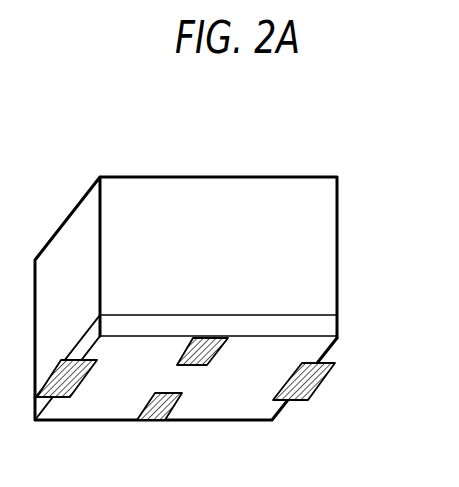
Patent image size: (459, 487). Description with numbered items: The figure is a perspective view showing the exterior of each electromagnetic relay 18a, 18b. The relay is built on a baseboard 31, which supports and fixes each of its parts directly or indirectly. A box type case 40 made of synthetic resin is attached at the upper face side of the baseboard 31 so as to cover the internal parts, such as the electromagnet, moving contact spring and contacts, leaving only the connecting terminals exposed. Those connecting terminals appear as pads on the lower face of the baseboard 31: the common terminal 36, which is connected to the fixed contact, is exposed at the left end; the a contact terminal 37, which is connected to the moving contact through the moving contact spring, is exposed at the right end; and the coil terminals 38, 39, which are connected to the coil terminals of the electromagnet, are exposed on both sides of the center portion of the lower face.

The light emitting element 18a is at (231, 283).
The light emitting element 18b is at (392, 122).
The box type case 40 is at (339, 256).
The baseboard 31 is at (339, 324).
The common terminal 36 is at (58, 397).
The a contact terminal 37 is at (325, 382).
The coil terminal 38 is at (195, 366).
The coil terminal 39 is at (146, 421).